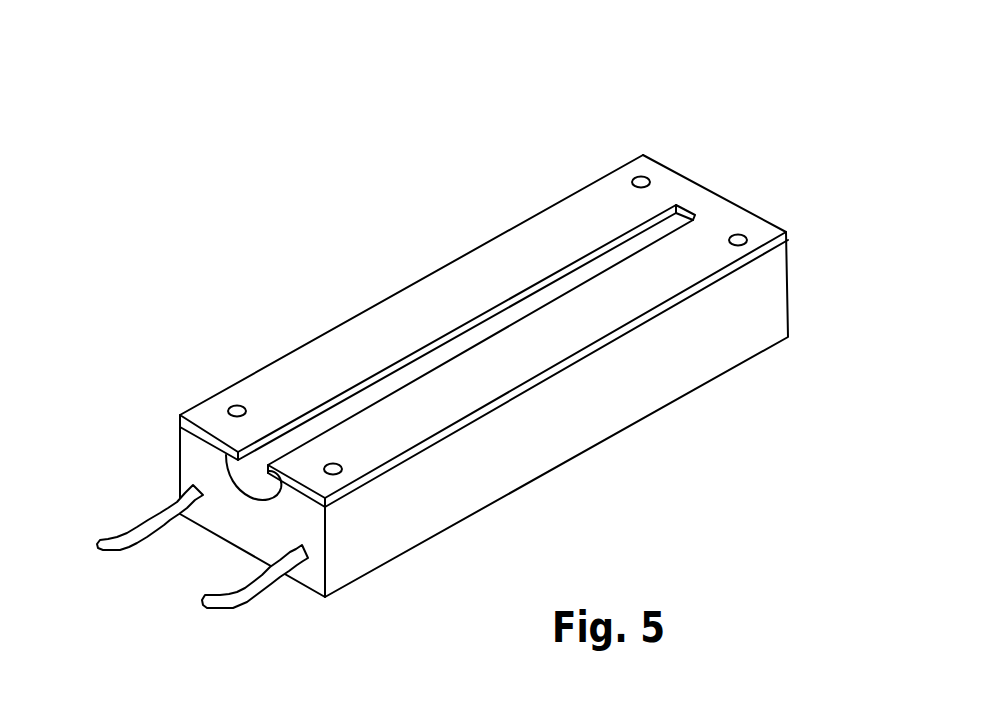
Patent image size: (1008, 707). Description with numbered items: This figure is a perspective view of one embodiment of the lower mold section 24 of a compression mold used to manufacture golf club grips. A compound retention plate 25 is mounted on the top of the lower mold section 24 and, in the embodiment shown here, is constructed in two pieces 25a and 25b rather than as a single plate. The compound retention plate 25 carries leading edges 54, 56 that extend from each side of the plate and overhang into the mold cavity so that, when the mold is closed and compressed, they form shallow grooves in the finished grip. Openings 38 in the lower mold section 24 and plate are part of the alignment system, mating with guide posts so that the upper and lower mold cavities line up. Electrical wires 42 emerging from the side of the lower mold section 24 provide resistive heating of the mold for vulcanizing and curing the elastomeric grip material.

The lower mold section 24 is at (578, 457).
The compound retention plate 25 is at (542, 297).
The first piece of compound retention plate 25a is at (688, 177).
The second piece of compound retention plate 25b is at (781, 224).
The openings 38 is at (233, 404).
The electrical wires 42 is at (110, 548).
The leading edge 54 is at (226, 456).
The leading edge 56 is at (247, 482).